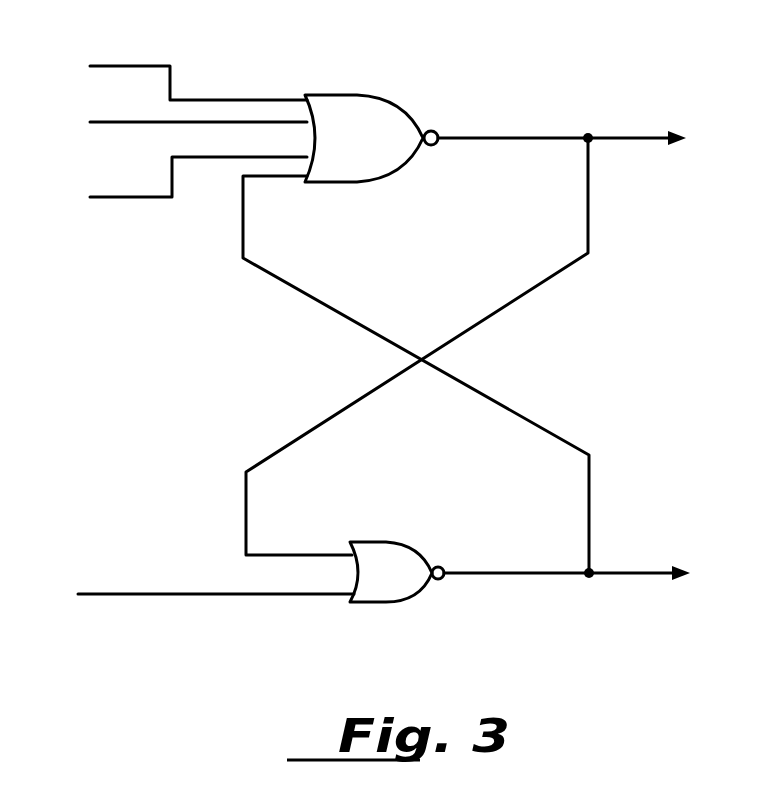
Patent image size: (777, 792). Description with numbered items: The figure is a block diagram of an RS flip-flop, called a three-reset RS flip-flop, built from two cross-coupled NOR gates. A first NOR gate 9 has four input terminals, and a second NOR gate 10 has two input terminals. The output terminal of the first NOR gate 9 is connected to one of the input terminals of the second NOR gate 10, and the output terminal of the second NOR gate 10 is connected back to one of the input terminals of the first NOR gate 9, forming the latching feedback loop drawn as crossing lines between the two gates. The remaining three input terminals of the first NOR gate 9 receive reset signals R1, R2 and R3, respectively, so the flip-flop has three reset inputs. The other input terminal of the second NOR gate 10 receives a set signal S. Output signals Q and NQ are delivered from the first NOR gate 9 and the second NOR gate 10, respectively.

The first NOR gate 9 is at (372, 118).
The second NOR gate 10 is at (390, 594).
The reset signal R1 is at (78, 58).
The reset signal R2 is at (78, 114).
The reset signal R3 is at (78, 189).
The set signal S is at (66, 586).
The output signal Q is at (575, 140).
The output signal NQ is at (584, 576).